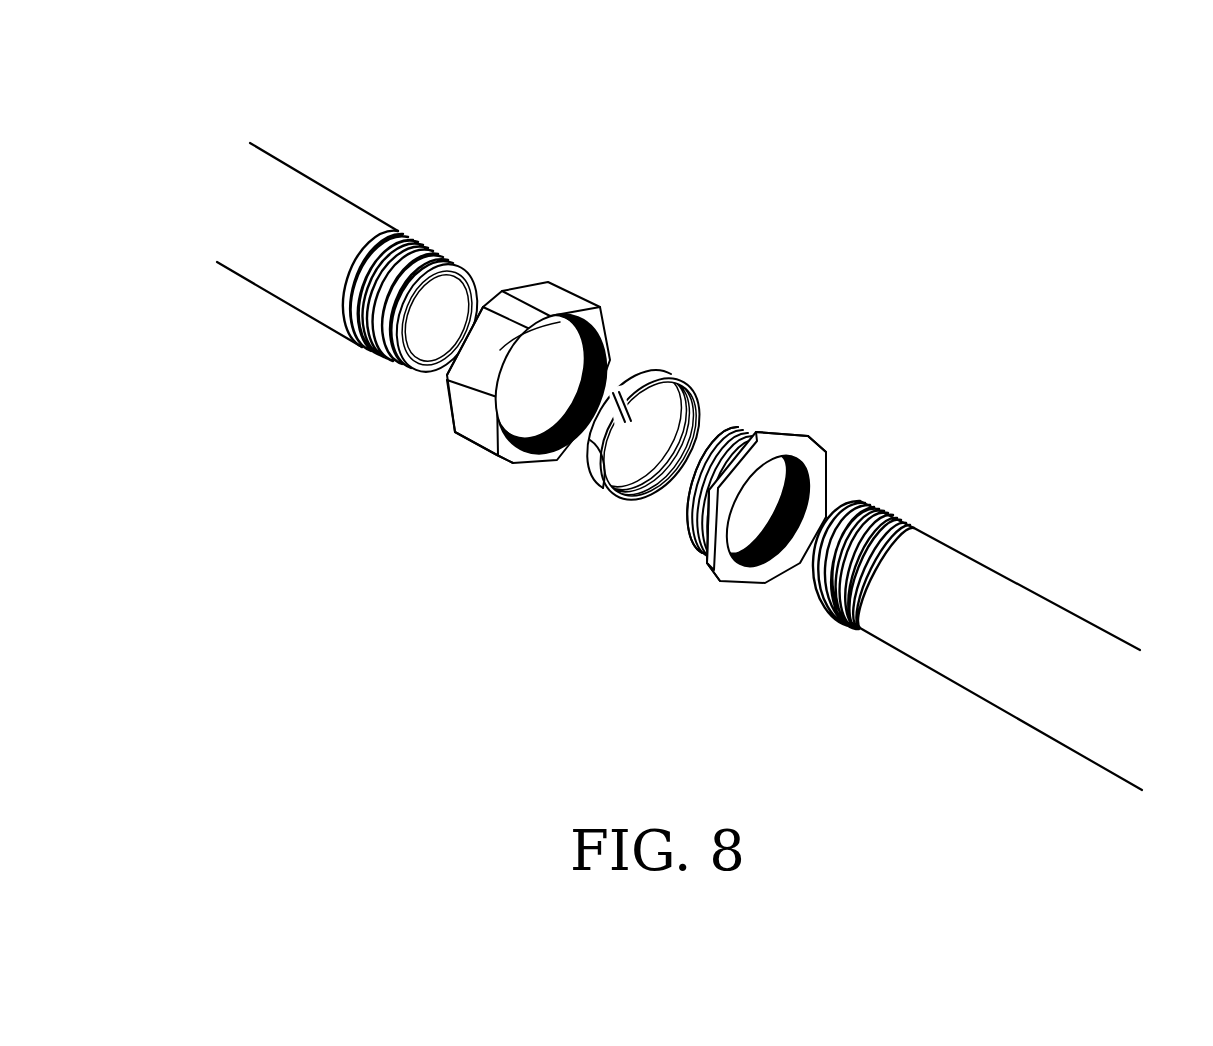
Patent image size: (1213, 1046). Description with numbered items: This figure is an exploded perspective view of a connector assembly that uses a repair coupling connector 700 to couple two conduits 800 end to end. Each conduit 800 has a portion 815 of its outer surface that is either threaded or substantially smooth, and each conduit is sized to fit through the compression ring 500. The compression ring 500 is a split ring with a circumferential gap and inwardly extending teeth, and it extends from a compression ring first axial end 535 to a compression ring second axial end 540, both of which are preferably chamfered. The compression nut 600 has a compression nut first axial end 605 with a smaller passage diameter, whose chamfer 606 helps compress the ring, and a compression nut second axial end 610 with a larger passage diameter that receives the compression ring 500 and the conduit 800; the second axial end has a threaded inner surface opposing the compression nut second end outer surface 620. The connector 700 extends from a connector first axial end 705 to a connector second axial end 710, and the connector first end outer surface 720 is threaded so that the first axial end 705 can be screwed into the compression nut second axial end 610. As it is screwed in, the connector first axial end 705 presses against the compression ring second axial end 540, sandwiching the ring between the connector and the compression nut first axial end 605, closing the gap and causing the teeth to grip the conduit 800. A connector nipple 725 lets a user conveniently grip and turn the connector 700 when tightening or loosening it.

The conduit 800 is at (391, 111).
The portion of the conduit outer surface 815 is at (430, 250).
The compression nut 600 is at (635, 225).
The compression nut first axial end 605 is at (455, 432).
The chamfer 606 is at (570, 345).
The compression nut second axial end 610 is at (466, 454).
The compression nut second end outer surface 620 is at (493, 457).
The compression ring 500 is at (729, 317).
The compression ring first axial end 535 is at (590, 478).
The compression ring second axial end 540 is at (652, 505).
The repair coupling connector 700 is at (881, 338).
The connector first axial end 705 is at (760, 428).
The connector second axial end 710 is at (828, 447).
The connector first end outer surface 720 is at (681, 552).
The connector nipple 725 is at (705, 570).